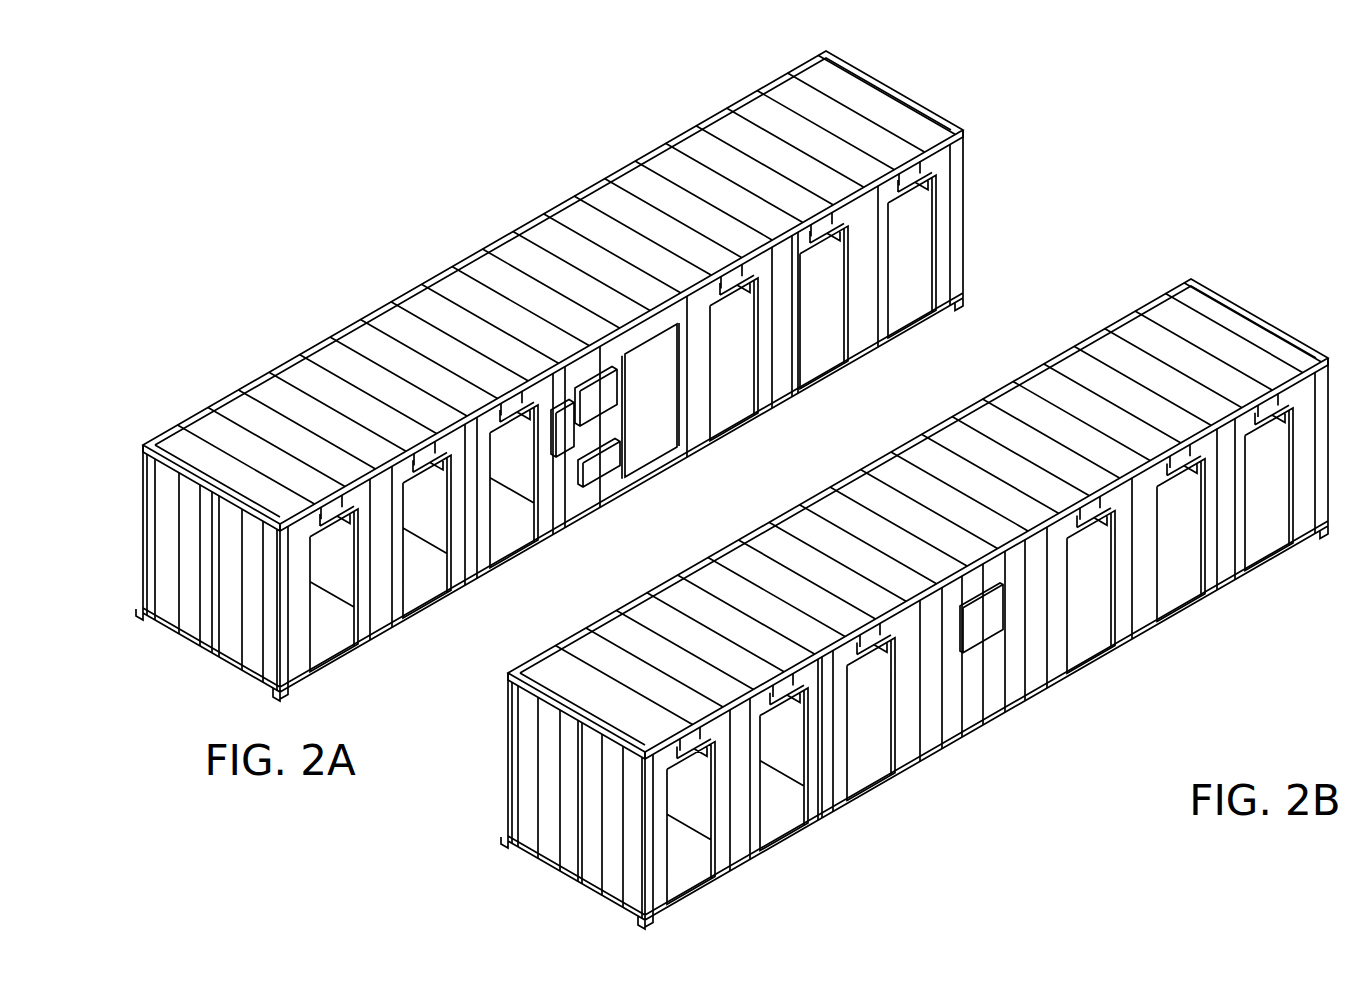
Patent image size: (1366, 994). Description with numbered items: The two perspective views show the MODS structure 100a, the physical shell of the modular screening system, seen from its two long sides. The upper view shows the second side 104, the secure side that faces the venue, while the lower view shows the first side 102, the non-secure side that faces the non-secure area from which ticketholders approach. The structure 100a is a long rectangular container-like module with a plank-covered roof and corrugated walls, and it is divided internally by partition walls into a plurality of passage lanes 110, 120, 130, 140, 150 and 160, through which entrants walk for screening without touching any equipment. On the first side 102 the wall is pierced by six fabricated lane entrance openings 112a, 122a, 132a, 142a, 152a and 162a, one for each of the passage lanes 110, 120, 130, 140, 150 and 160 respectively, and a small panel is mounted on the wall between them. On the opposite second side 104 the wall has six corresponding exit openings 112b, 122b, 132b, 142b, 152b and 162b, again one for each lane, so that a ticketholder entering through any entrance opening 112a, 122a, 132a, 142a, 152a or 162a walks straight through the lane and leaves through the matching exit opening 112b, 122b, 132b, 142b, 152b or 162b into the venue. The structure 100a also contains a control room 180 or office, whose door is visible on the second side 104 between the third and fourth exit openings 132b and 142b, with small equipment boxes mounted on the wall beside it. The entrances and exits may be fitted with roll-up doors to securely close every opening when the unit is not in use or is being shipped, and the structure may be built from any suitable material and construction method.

In FIG. 2A, the MODS structure 100a is at (535, 222).
In FIG. 2A, the first side 102 is at (455, 265).
In FIG. 2B, the first side 102 is at (1000, 685).
In FIG. 2A, the second side 104 is at (553, 505).
In FIG. 2A, the passage lane 110 is at (186, 398).
In FIG. 2A, the passage lane 120 is at (283, 345).
In FIG. 2A, the passage lane 130 is at (367, 297).
In FIG. 2A, the passage lane 140 is at (585, 167).
In FIG. 2A, the passage lane 150 is at (677, 115).
In FIG. 2A, the passage lane 160 is at (765, 63).
In FIG. 2A, the exit opening 112b is at (325, 640).
In FIG. 2A, the exit opening 122b is at (420, 582).
In FIG. 2A, the exit opening 132b is at (508, 535).
In FIG. 2A, the exit opening 142b is at (740, 410).
In FIG. 2A, the exit opening 152b is at (815, 355).
In FIG. 2A, the exit opening 162b is at (905, 302).
In FIG. 2A, the control room 180 is at (645, 455).
In FIG. 2B, the lane entrance opening 112a is at (1265, 540).
In FIG. 2B, the lane entrance opening 122a is at (1175, 590).
In FIG. 2B, the lane entrance opening 132a is at (1090, 640).
In FIG. 2B, the lane entrance opening 142a is at (865, 765).
In FIG. 2B, the lane entrance opening 152a is at (780, 815).
In FIG. 2B, the lane entrance opening 162a is at (680, 870).